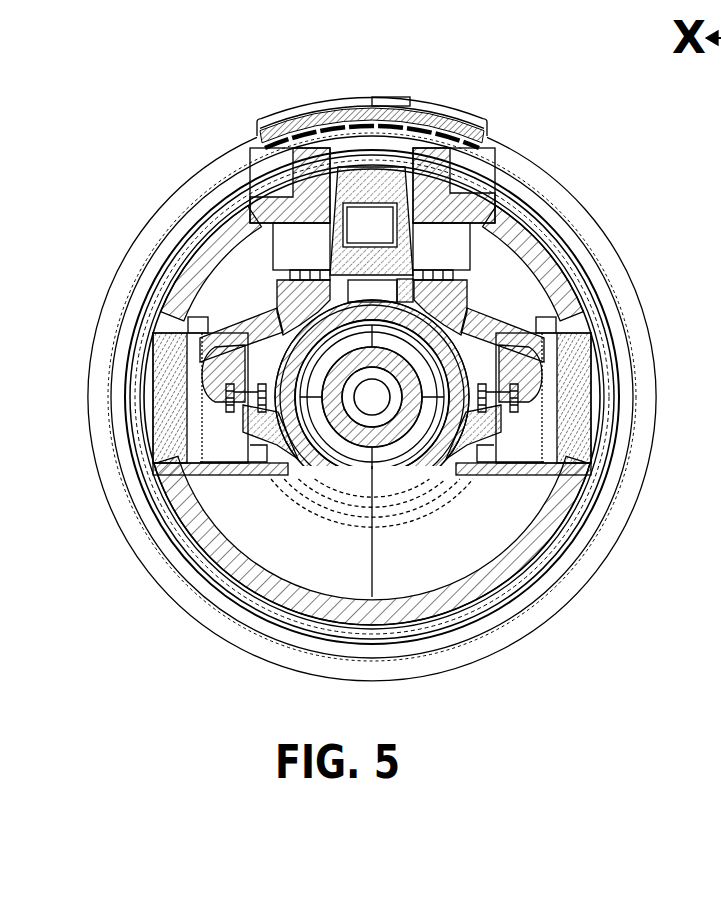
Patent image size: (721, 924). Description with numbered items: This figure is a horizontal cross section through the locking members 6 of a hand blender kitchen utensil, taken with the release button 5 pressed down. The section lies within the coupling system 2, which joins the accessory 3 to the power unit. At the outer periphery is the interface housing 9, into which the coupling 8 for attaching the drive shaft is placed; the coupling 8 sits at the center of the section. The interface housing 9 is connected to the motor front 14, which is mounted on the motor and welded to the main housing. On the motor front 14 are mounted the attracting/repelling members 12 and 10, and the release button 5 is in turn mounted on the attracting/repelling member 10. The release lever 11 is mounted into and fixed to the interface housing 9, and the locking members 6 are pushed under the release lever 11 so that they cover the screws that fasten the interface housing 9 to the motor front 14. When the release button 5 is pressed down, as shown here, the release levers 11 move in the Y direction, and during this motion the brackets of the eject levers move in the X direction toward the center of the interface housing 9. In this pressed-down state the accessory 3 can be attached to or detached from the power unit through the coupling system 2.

The coupling system 2 is at (143, 93).
The accessory 3 is at (559, 598).
The release button 5 is at (338, 98).
The locking members 6 is at (258, 365).
The coupling 8 is at (380, 443).
The interface housing 9 is at (530, 260).
The attracting/repelling member 10 is at (400, 280).
The release lever 11 is at (362, 187).
The attracting/repelling member 12 is at (227, 400).
The motor front 14 is at (418, 472).